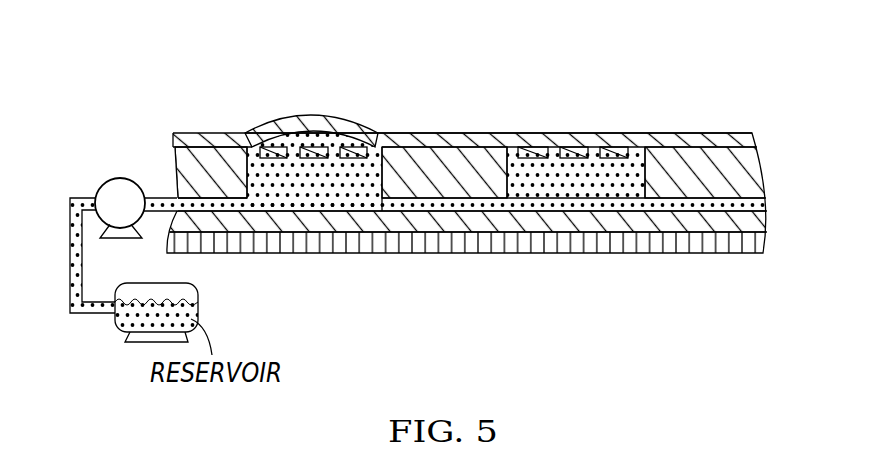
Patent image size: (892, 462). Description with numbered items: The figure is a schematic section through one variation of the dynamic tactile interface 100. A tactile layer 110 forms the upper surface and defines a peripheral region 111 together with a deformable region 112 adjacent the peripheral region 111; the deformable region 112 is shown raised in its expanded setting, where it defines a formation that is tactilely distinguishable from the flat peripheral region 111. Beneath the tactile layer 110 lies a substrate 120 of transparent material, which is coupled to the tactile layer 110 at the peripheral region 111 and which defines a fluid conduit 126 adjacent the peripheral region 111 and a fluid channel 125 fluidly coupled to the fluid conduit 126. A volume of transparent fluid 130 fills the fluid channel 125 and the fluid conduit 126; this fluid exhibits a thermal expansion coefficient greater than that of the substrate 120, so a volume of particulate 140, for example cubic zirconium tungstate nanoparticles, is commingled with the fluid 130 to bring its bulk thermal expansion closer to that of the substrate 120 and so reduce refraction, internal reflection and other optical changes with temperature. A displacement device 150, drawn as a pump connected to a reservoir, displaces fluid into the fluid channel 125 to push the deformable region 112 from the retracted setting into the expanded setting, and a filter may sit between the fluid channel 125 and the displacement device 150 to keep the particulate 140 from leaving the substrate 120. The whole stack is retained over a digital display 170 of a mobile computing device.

The dynamic tactile interface 100 is at (677, 92).
The tactile layer 110 is at (745, 141).
The peripheral region 111 is at (452, 131).
The deformable region 112 is at (313, 113).
The substrate 120 is at (735, 172).
The fluid channel 125 is at (168, 207).
The fluid conduit 126 is at (295, 145).
The volume of transparent fluid 130 is at (270, 178).
The particulate 140 is at (338, 202).
The displacement device 150 is at (112, 197).
The digital display 170 is at (708, 243).